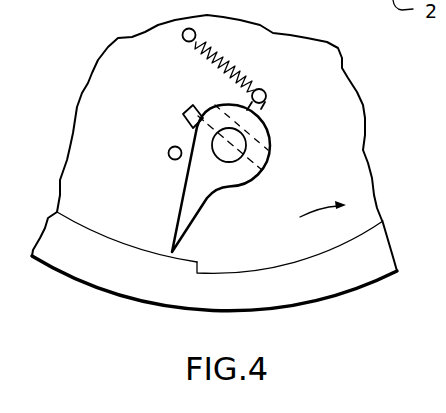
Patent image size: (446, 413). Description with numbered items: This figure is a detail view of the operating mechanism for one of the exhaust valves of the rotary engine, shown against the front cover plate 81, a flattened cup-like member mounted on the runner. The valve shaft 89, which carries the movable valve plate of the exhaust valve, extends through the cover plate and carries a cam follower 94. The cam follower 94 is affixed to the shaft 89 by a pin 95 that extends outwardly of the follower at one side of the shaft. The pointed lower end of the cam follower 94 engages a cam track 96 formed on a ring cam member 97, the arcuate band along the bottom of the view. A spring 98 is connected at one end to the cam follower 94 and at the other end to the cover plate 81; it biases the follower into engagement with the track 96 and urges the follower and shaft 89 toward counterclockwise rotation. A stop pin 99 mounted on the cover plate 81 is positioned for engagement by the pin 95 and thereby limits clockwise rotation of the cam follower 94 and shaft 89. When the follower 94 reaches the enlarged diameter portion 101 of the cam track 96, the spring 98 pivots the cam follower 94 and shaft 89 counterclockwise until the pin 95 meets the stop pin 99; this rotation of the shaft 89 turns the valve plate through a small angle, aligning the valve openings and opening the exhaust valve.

The front cover plate 81 is at (356, 173).
The valve shaft 89 is at (246, 141).
The cam follower 94 is at (197, 207).
The pin 95 is at (198, 108).
The cam track 96 is at (123, 242).
The ring cam member 97 is at (143, 285).
The spring 98 is at (233, 63).
The stop pin 99 is at (168, 153).
The enlarged diameter portion 101 is at (246, 267).